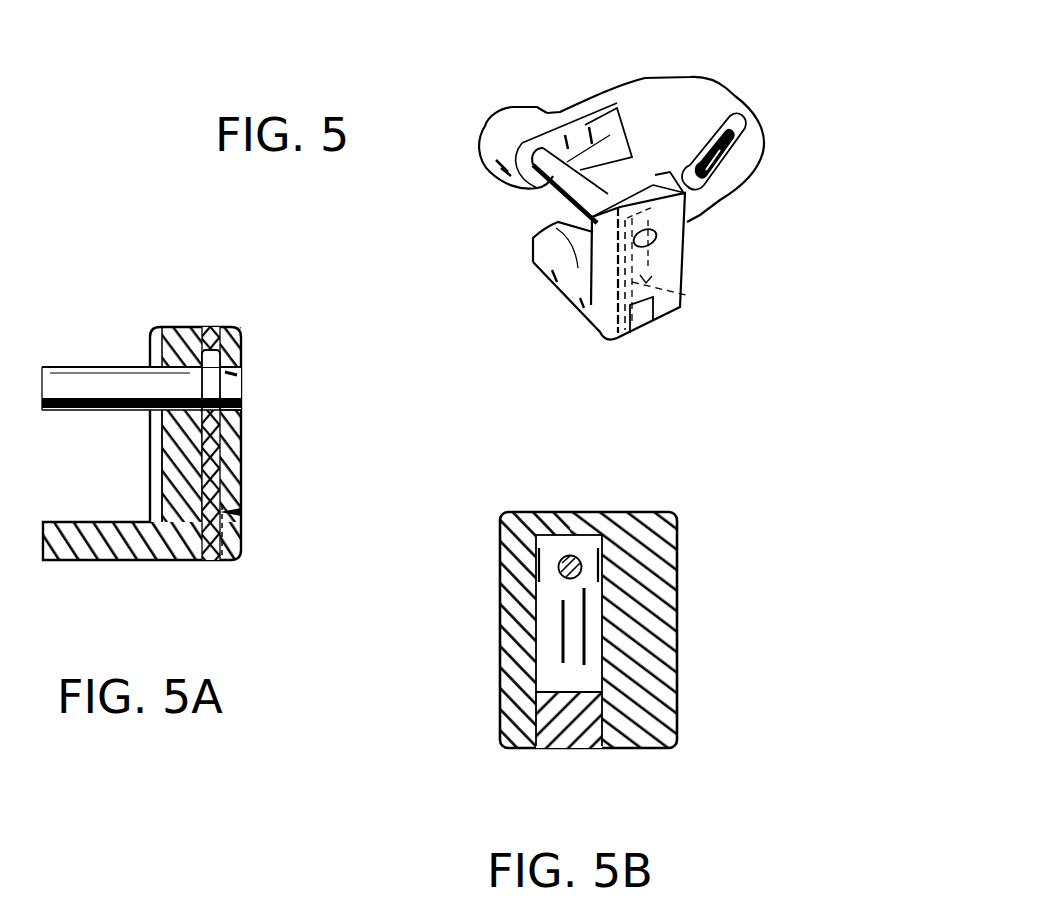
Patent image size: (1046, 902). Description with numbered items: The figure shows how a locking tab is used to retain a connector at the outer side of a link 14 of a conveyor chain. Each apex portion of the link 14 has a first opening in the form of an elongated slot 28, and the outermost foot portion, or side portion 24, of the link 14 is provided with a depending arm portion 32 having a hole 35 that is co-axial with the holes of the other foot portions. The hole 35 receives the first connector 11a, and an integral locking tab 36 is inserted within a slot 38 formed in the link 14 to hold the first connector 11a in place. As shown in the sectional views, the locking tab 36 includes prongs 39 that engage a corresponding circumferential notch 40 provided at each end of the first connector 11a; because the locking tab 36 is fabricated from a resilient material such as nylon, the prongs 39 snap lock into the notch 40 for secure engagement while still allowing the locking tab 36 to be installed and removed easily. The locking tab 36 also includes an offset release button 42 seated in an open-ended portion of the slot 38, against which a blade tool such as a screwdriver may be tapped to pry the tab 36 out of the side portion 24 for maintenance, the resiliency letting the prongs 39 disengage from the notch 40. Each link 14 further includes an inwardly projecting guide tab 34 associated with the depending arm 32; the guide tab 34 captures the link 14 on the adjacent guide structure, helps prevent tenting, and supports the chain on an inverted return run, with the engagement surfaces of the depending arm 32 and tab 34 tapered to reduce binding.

In FIG. 5, the first connector 11a is at (578, 180).
In FIG. 5A, the first connector 11a is at (117, 383).
In FIG. 5B, the first connector 11a is at (570, 555).
In FIG. 5, the link 14 is at (740, 88).
In FIG. 5, the side portion 24 is at (688, 352).
In FIG. 5A, the side portion 24 is at (252, 312).
In FIG. 5, the elongated slot 28 is at (730, 152).
In FIG. 5, the depending arm portion 32 is at (667, 250).
In FIG. 5A, the depending arm portion 32 is at (187, 530).
In FIG. 5, the guide tab 34 is at (562, 238).
In FIG. 5A, the guide tab 34 is at (88, 535).
In FIG. 5A, the hole 35 is at (233, 397).
In FIG. 5, the locking tab 36 is at (690, 296).
In FIG. 5A, the locking tab 36 is at (212, 458).
In FIG. 5B, the locking tab 36 is at (577, 628).
In FIG. 5B, the slot 38 is at (603, 651).
In FIG. 5B, the prongs 39 is at (547, 543).
In FIG. 5A, the circumferential notch 40 is at (222, 360).
In FIG. 5, the release button 42 is at (648, 327).
In FIG. 5A, the release button 42 is at (247, 523).
In FIG. 5B, the release button 42 is at (570, 727).